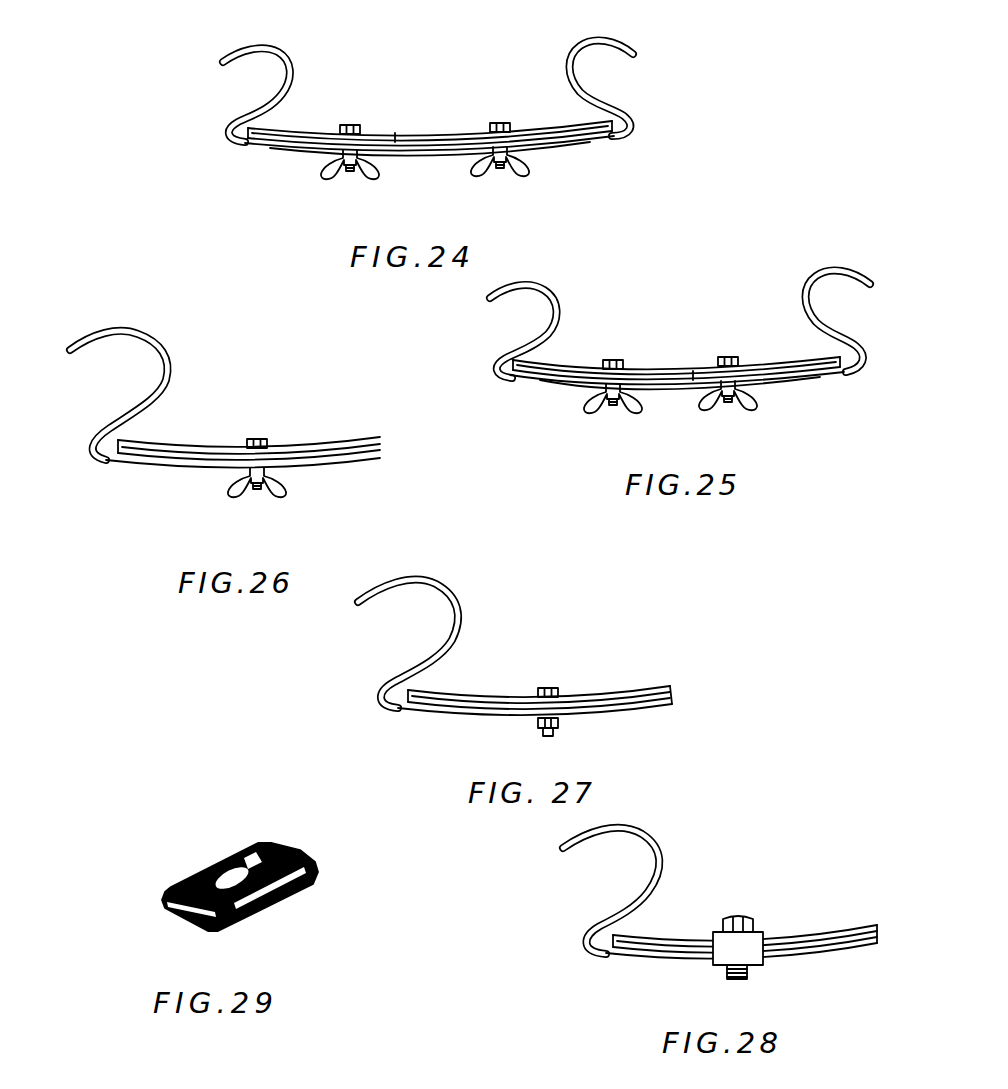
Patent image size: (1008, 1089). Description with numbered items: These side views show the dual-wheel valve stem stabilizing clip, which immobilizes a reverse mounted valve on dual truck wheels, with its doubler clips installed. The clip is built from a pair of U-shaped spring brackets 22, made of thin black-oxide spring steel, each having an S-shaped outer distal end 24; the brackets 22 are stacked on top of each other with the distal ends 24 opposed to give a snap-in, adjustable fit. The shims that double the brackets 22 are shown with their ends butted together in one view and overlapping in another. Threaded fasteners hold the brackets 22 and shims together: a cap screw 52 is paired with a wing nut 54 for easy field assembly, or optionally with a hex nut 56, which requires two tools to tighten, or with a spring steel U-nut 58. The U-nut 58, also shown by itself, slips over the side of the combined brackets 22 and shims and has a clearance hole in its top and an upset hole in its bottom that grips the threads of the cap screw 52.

In FIG. 24, the U-shaped spring bracket 22 is at (276, 152).
In FIG. 25, the U-shaped spring bracket 22 is at (540, 382).
In FIG. 26, the U-shaped spring bracket 22 is at (162, 468).
In FIG. 27, the U-shaped spring bracket 22 is at (410, 712).
In FIG. 28, the U-shaped spring bracket 22 is at (600, 950).
In FIG. 24, the S-shaped outer distal end 24 is at (226, 68).
In FIG. 25, the S-shaped outer distal end 24 is at (492, 304).
In FIG. 26, the S-shaped outer distal end 24 is at (108, 334).
In FIG. 27, the S-shaped outer distal end 24 is at (426, 582).
In FIG. 28, the S-shaped outer distal end 24 is at (656, 850).
In FIG. 24, the cap screw 52 is at (356, 125).
In FIG. 25, the cap screw 52 is at (614, 360).
In FIG. 26, the cap screw 52 is at (258, 438).
In FIG. 27, the cap screw 52 is at (556, 686).
In FIG. 28, the cap screw 52 is at (746, 918).
In FIG. 24, the wing nut 54 is at (366, 176).
In FIG. 25, the wing nut 54 is at (618, 412).
In FIG. 26, the wing nut 54 is at (284, 498).
In FIG. 27, the hex nut 56 is at (566, 726).
In FIG. 28, the spring steel U-nut 58 is at (766, 966).
In FIG. 29, the spring steel U-nut 58 is at (206, 872).